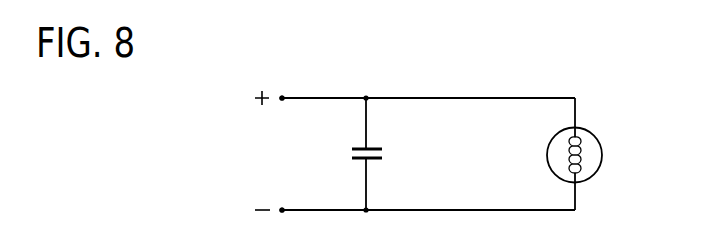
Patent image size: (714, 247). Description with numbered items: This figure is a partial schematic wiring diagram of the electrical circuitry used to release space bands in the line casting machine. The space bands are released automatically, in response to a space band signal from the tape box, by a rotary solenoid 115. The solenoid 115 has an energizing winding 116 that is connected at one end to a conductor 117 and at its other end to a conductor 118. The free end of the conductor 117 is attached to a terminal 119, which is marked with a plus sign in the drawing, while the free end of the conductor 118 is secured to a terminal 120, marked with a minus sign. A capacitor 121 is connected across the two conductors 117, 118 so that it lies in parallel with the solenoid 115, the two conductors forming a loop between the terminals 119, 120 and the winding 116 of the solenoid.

The rotary solenoid 115 is at (599, 145).
The energizing winding 116 is at (580, 151).
The conductor 117 is at (448, 98).
The conductor 118 is at (500, 211).
The terminal 119 is at (284, 96).
The terminal 120 is at (282, 212).
The capacitor 121 is at (352, 159).